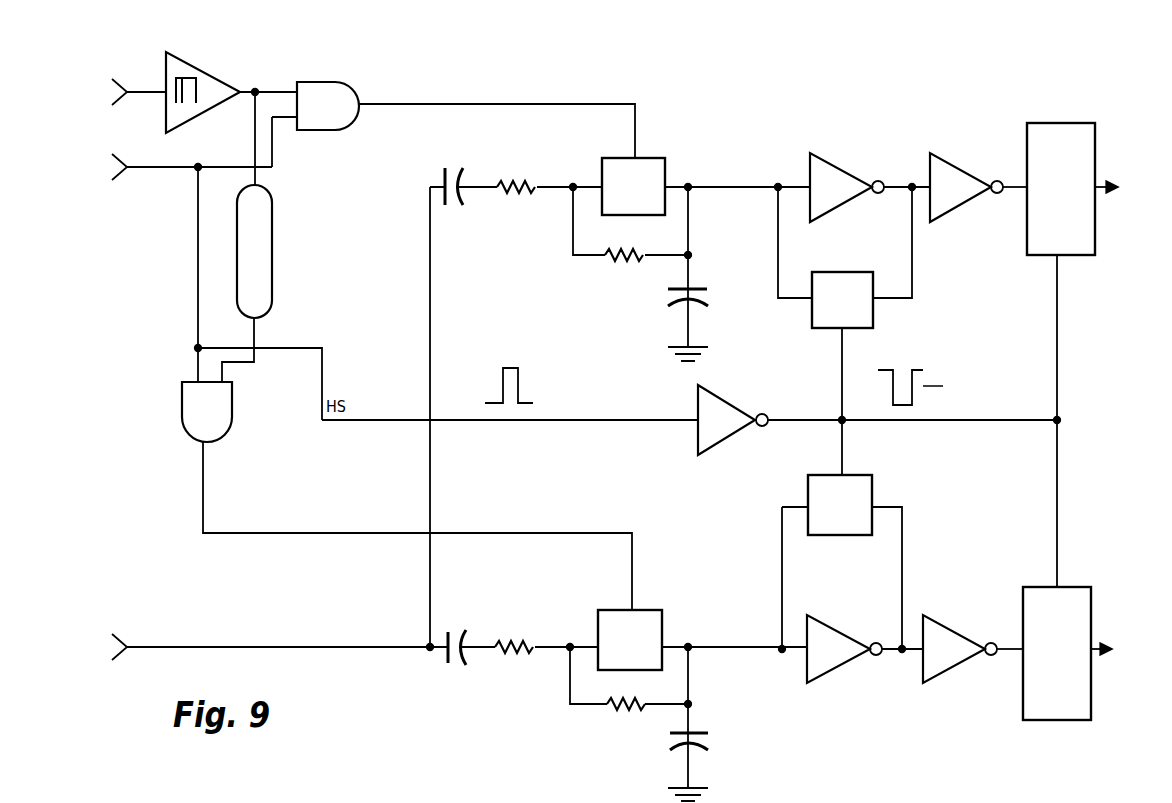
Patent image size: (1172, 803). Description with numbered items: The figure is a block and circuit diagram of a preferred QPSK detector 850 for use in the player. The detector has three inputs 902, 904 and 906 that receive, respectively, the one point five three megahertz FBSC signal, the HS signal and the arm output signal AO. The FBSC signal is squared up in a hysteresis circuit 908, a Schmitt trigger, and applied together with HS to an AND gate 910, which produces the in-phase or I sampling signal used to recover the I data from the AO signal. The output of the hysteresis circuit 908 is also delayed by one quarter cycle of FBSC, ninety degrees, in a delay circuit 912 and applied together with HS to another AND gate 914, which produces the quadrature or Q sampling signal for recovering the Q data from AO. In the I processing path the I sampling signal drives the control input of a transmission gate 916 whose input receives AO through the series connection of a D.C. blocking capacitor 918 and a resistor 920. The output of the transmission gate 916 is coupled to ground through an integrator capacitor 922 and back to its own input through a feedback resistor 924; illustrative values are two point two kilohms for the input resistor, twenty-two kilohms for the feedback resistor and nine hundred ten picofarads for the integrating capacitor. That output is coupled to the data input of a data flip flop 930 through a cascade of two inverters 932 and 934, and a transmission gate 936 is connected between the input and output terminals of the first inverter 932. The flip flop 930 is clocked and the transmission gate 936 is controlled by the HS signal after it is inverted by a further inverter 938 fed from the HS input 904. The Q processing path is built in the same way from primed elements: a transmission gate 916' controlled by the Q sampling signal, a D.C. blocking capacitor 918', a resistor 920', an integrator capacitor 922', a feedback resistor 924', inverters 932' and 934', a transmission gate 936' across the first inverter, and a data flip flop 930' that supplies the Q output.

The QPSK detector 850 is at (762, 128).
The input 902 is at (117, 98).
The input 904 is at (117, 173).
The input 906 is at (117, 641).
The hysteresis circuit 908 is at (215, 77).
The AND gate 910 is at (453, 124).
The delay circuit 912 is at (272, 256).
The AND gate 914 is at (182, 415).
The transmission gate 916 is at (706, 170).
The transmission gate 916' is at (702, 623).
The D.C. blocking capacitor 918 is at (458, 170).
The D.C. blocking capacitor 918' is at (457, 662).
The resistor 920 is at (549, 176).
The resistor 920' is at (546, 640).
The integrator capacitor 922 is at (687, 274).
The integrator capacitor 922' is at (711, 724).
The feedback resistor 924 is at (632, 238).
The feedback resistor 924' is at (631, 695).
The data flip flop 930 is at (1092, 339).
The data flip flop 930' is at (1087, 672).
The inverter 932 is at (870, 179).
The inverter 932' is at (865, 656).
The inverter 934 is at (978, 179).
The inverter 934' is at (973, 656).
The transmission gate 936 is at (860, 331).
The transmission gate 936' is at (850, 558).
The inverter 938 is at (722, 402).